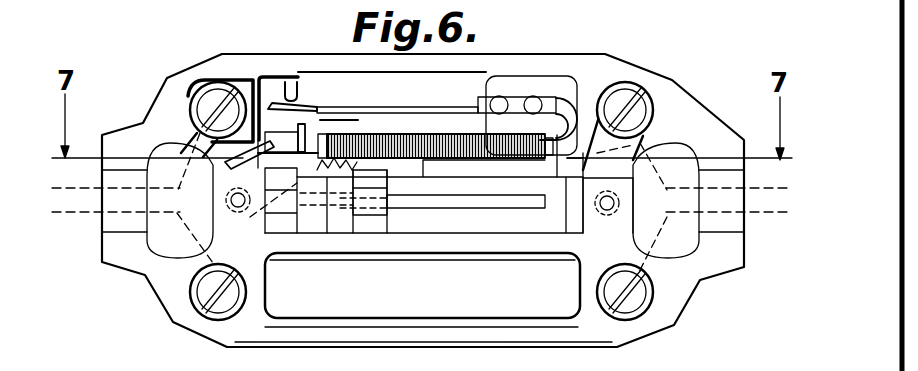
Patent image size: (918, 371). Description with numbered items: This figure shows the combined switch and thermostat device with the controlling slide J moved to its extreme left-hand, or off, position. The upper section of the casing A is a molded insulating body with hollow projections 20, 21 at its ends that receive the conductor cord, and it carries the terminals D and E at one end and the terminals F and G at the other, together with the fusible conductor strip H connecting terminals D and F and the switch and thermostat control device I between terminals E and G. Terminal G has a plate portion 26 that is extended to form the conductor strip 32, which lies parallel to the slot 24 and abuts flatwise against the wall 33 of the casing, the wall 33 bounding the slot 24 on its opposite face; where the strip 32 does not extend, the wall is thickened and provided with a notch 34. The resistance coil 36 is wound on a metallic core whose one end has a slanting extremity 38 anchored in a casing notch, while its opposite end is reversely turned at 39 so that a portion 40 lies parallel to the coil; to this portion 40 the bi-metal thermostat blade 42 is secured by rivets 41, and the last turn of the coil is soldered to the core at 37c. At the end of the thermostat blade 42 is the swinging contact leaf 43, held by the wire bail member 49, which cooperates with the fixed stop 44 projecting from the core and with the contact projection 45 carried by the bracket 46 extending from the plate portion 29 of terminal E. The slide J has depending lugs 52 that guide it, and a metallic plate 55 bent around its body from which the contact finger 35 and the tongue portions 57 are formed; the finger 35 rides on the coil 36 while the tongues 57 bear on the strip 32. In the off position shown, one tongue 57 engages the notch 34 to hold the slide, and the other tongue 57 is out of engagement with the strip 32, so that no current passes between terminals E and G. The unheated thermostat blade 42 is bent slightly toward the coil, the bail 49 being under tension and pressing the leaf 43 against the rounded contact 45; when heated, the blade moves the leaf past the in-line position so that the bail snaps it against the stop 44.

The upper section of the casing A is at (652, 80).
The hollow projection 20 is at (118, 247).
The hollow projection 21 is at (718, 256).
The terminal E is at (207, 108).
The terminal D is at (207, 292).
The terminal G is at (640, 115).
The terminal F is at (637, 300).
The fusible conductor strip H is at (553, 303).
The plate portion 29 is at (240, 87).
The bracket 46 is at (263, 76).
The contact projection 45 is at (290, 90).
The swinging metallic contact piece 43 is at (308, 108).
The bi-metal thermostat bar 42 is at (466, 108).
The switch and thermostat control device I is at (445, 112).
The fixed stop 44 is at (355, 126).
The wire bail member 49 is at (365, 92).
The slanting extremity 38 is at (213, 172).
The resistance coil 36 is at (414, 134).
The portion of the core 40 is at (516, 98).
The rivets 41 is at (537, 105).
The reversely turned portion 39 is at (560, 105).
The soldered connection 37c is at (582, 96).
The plate portion 26 is at (567, 158).
The conductor strip 32 is at (497, 177).
The wall 33 is at (454, 184).
The slot 24 is at (415, 202).
The lugs 52 is at (283, 207).
The metallic plate 55 is at (309, 185).
The metallic contact finger 35 is at (328, 185).
The controlling slide J is at (349, 185).
The tongue portions 57 is at (353, 167).
The notch 34 is at (241, 213).